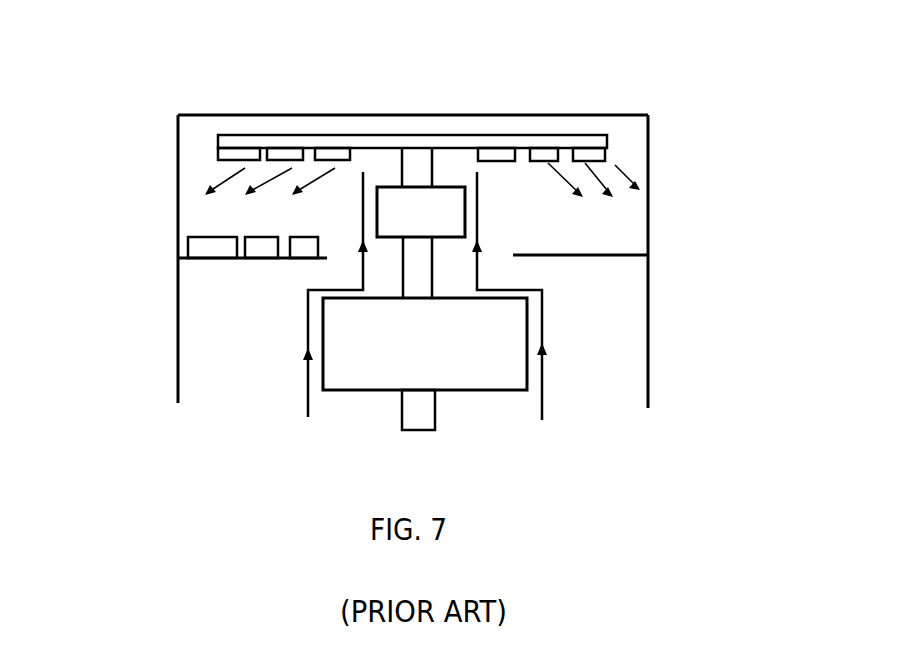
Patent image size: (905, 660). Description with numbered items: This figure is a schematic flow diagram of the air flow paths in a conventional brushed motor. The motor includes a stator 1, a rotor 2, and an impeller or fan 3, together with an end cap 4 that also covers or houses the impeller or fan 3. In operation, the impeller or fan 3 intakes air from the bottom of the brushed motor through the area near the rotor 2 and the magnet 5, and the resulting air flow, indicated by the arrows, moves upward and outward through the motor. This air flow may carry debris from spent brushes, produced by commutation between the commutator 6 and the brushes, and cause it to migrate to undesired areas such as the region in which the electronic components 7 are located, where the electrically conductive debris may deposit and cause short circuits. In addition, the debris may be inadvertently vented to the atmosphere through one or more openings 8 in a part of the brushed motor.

The stator 1 is at (178, 307).
The rotor 2 is at (418, 400).
The impeller or fan 3 is at (267, 143).
The end cap 4 is at (533, 115).
The magnet 5 is at (510, 350).
The commutator 6 is at (398, 203).
The electronic components 7 is at (207, 247).
The openings 8 is at (616, 155).